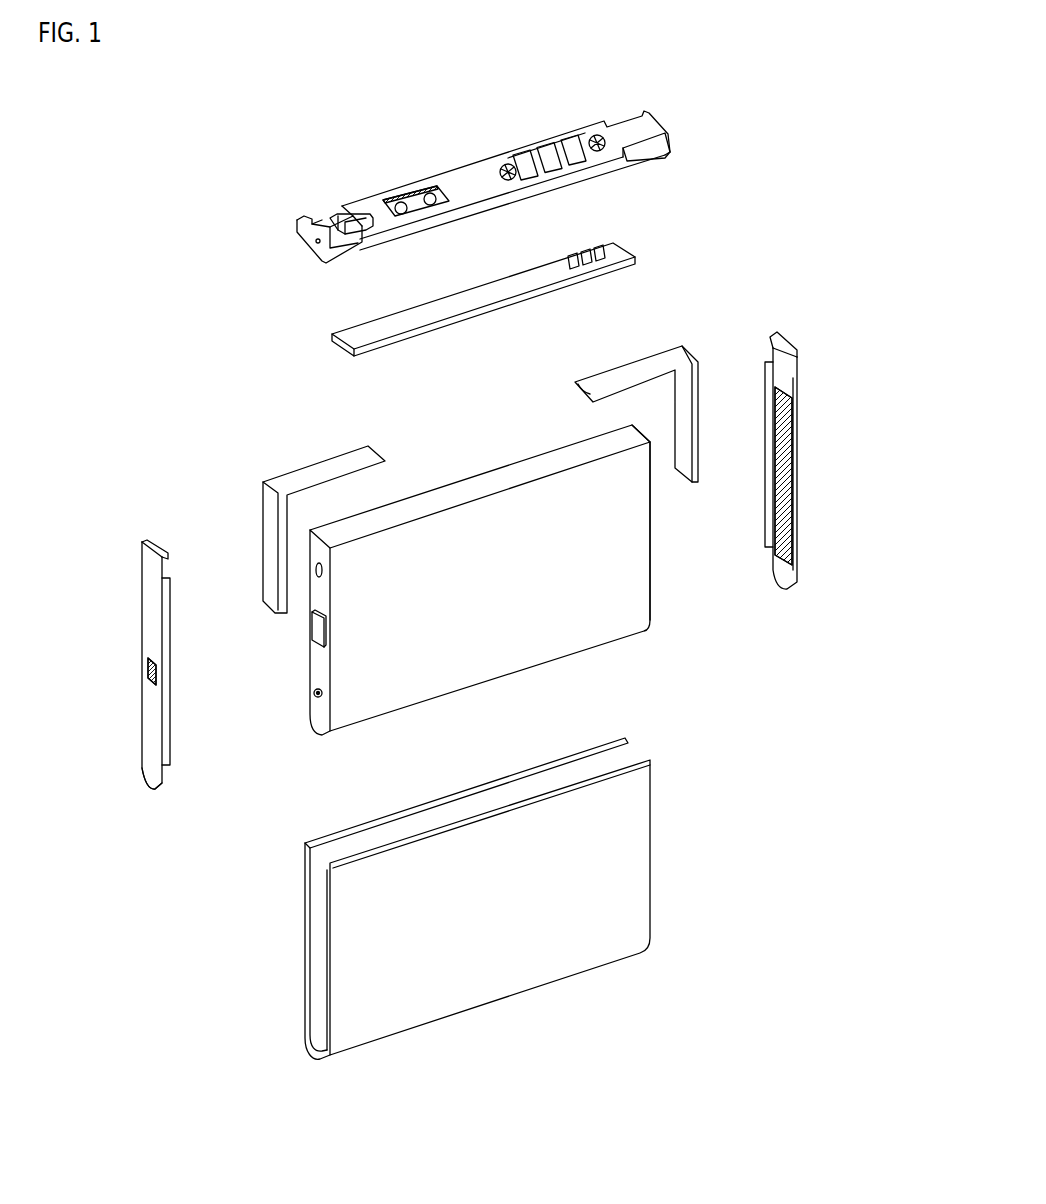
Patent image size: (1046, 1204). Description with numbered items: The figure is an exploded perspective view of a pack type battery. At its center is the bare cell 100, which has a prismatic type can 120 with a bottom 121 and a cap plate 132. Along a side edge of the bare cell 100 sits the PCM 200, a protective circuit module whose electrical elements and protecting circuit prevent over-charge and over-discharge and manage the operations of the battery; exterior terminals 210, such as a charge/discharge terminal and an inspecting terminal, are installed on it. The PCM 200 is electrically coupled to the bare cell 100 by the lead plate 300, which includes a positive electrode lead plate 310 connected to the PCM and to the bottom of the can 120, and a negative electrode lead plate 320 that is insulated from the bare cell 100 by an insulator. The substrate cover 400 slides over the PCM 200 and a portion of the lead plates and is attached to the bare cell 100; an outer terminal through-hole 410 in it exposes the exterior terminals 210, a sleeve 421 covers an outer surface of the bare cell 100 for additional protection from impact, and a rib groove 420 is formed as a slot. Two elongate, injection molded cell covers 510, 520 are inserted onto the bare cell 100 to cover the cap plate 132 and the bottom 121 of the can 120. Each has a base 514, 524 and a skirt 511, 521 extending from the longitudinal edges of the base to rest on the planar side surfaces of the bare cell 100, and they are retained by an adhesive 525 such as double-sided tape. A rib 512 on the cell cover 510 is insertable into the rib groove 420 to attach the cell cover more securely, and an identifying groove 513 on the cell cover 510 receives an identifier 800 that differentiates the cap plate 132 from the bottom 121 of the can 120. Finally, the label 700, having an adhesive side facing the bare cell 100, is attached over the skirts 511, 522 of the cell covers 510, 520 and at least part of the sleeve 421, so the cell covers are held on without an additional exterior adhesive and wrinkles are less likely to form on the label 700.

The bare cell 100 is at (487, 600).
The prismatic type can 120 is at (487, 580).
The bottom of the can 121 is at (652, 612).
The cap plate 132 is at (318, 660).
The PCM 200 is at (483, 279).
The exterior terminals 210 is at (587, 255).
The lead plate 300 is at (480, 479).
The positive electrode lead plate 310 is at (575, 383).
The negative electrode lead plate 320 is at (368, 447).
The substrate cover 400 is at (457, 182).
The outer terminal through-hole 410 is at (550, 143).
The rib groove 420 is at (302, 248).
The sleeve 421 is at (623, 167).
The cell cover 510 is at (150, 636).
The skirt 511 is at (168, 743).
The rib 512 is at (163, 552).
The identifying groove 513 is at (145, 675).
The base 514 is at (148, 765).
The cell cover 520 is at (790, 434).
The skirt 521 is at (797, 478).
The skirt 522 is at (782, 342).
The base 524 is at (770, 353).
The adhesive 525 is at (790, 533).
The label 700 is at (647, 853).
The identifier 800 is at (147, 663).